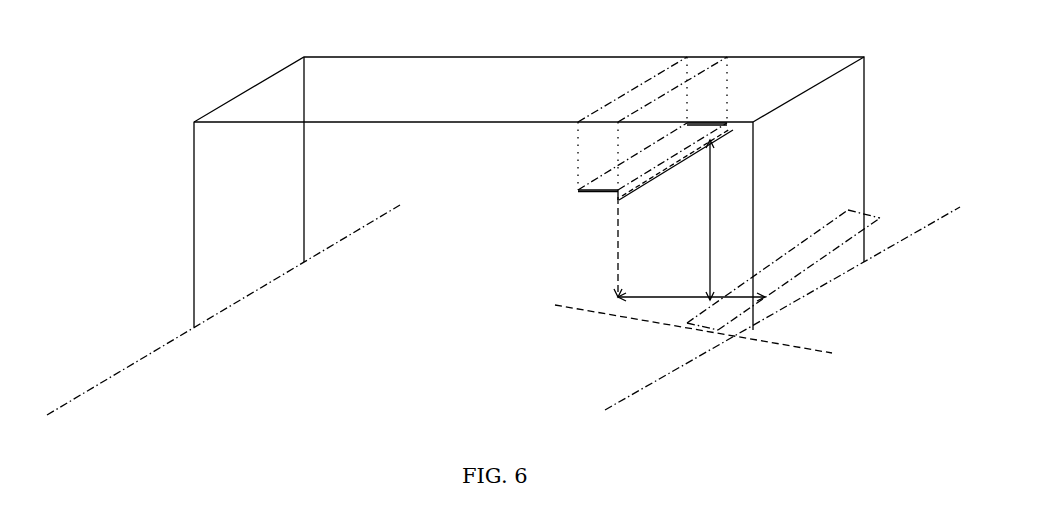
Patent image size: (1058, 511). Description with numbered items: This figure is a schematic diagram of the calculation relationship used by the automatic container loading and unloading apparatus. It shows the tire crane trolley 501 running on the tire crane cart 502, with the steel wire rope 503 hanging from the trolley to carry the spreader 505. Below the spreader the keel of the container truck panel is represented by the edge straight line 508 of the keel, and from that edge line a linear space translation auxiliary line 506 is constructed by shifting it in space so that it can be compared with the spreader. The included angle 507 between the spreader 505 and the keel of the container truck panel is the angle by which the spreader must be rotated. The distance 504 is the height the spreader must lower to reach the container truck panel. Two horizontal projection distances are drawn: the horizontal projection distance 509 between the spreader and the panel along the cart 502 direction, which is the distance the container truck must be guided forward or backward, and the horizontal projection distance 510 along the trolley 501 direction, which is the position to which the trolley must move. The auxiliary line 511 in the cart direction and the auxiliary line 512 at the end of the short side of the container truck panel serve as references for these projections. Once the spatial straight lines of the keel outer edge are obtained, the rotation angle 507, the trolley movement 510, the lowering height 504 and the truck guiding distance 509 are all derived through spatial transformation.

The tire crane trolley 501 is at (645, 87).
The tire crane cart 502 is at (870, 131).
The steel wire rope 503 is at (574, 155).
The distance h from the spreader to the container truck panel 504 is at (714, 182).
The spreader 505 is at (614, 194).
The linear space translation auxiliary line of the keel of the container truck panel 506 is at (640, 197).
The included angle θ between the spreader and the keel of the container truck panel 507 is at (621, 200).
The edge straight line of the keel of the container truck panel 508 is at (808, 243).
The horizontal projection distance d between the spreader and the container truck pa 509 is at (612, 300).
The horizontal projection distance X between the spreader and the container truck pa 510 is at (618, 304).
The auxiliary line in the cart direction 511 is at (660, 378).
The auxiliary line at the end of the short side of the container truck panel 512 is at (790, 350).